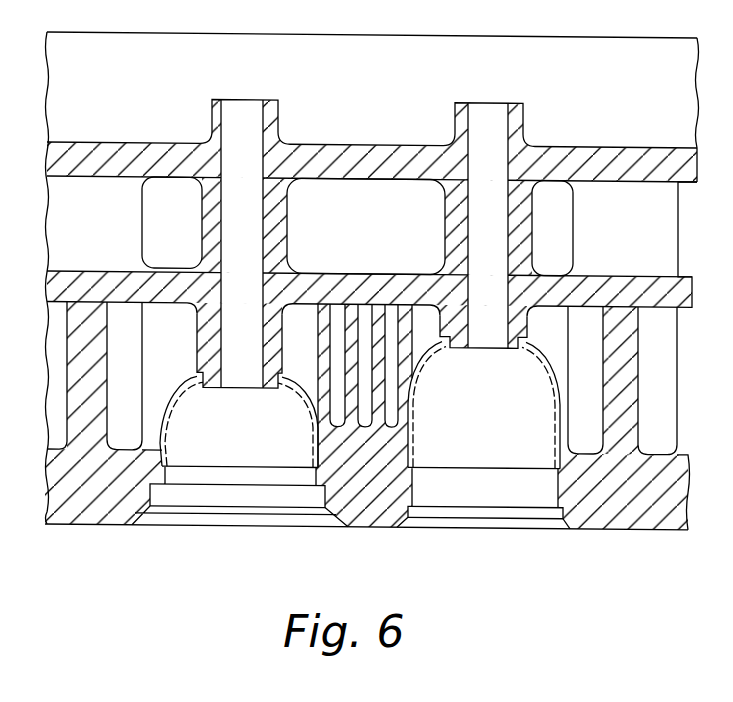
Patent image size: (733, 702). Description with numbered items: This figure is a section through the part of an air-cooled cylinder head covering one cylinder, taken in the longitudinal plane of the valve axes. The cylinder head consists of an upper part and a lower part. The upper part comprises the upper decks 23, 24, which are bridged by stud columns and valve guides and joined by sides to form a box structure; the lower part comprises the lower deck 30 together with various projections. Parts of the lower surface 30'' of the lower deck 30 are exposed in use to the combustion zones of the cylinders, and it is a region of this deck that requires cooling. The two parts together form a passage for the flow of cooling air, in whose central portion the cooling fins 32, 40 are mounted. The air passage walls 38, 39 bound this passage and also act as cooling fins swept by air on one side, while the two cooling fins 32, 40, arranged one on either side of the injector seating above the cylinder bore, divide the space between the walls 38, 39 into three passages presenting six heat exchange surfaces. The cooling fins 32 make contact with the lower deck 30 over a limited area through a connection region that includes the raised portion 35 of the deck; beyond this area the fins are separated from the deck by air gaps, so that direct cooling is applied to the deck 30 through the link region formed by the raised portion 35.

The upper deck 23 is at (134, 141).
The upper deck 24 is at (625, 271).
The lower deck 30 is at (624, 441).
The lower surface of the lower deck 30'' is at (105, 431).
The cooling fin 32 is at (338, 310).
The raised portion of the deck 35 is at (334, 398).
The air passage wall 38 is at (341, 395).
The air passage wall 39 is at (395, 386).
The cooling fin 40 is at (390, 307).